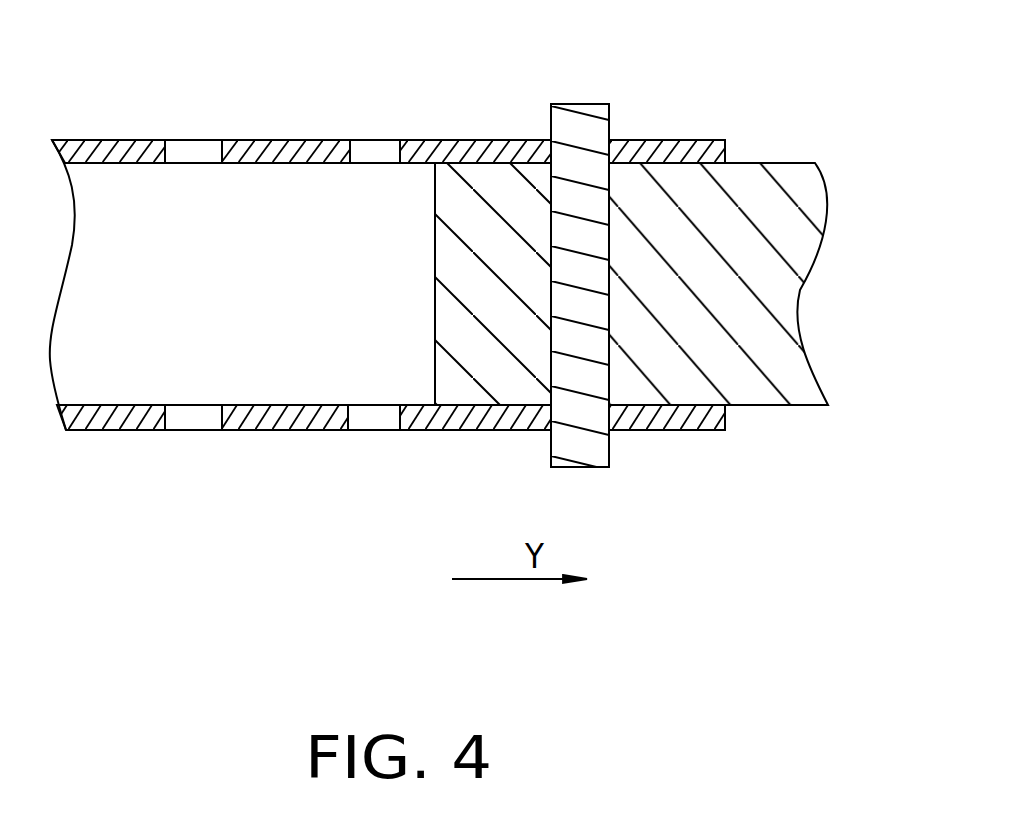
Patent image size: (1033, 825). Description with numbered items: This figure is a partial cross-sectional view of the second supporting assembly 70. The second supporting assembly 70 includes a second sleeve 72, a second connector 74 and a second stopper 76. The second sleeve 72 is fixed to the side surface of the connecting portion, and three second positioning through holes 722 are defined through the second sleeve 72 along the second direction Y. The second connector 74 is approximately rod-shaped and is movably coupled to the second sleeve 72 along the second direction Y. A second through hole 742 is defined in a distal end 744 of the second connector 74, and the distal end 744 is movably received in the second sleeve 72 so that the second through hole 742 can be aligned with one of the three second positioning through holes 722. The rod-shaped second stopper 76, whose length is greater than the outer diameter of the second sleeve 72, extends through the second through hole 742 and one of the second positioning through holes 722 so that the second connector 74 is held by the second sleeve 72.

The second supporting assembly 70 is at (490, 270).
The second sleeve 72 is at (683, 142).
The second positioning through holes 722 is at (550, 152).
The second connector 74 is at (795, 175).
The second through hole 742 is at (610, 278).
The distal end 744 is at (647, 385).
The second stopper 76 is at (573, 127).